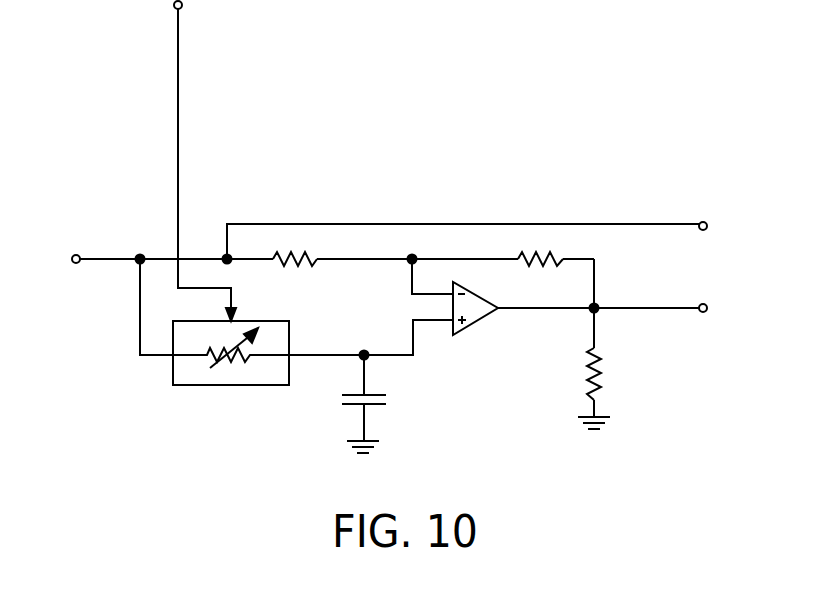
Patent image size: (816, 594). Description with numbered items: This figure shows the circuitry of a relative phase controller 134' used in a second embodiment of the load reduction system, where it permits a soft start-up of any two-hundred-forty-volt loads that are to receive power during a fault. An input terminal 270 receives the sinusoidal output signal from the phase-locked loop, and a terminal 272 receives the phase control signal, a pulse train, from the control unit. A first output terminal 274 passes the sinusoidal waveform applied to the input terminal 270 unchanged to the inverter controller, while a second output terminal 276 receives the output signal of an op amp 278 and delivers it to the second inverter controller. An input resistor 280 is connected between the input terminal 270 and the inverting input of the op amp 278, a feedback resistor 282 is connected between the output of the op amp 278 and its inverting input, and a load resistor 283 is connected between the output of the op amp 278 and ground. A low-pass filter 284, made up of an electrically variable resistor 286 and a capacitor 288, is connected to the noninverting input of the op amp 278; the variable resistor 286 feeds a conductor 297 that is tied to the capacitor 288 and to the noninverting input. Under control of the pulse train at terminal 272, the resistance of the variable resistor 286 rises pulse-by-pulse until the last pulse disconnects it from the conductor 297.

The relative phase controller 134' is at (208, 424).
The input terminal 270 is at (73, 254).
The terminal 272 is at (172, 7).
The first output terminal 274 is at (699, 222).
The second output terminal 276 is at (704, 313).
The op amp 278 is at (476, 321).
The input resistor 280 is at (300, 266).
The feedback resistor 282 is at (535, 266).
The load resistor 283 is at (604, 375).
The low-pass filter 284 is at (395, 408).
The electrically variable resistor 286 is at (231, 381).
The capacitor 288 is at (350, 407).
The conductor 297 is at (388, 353).